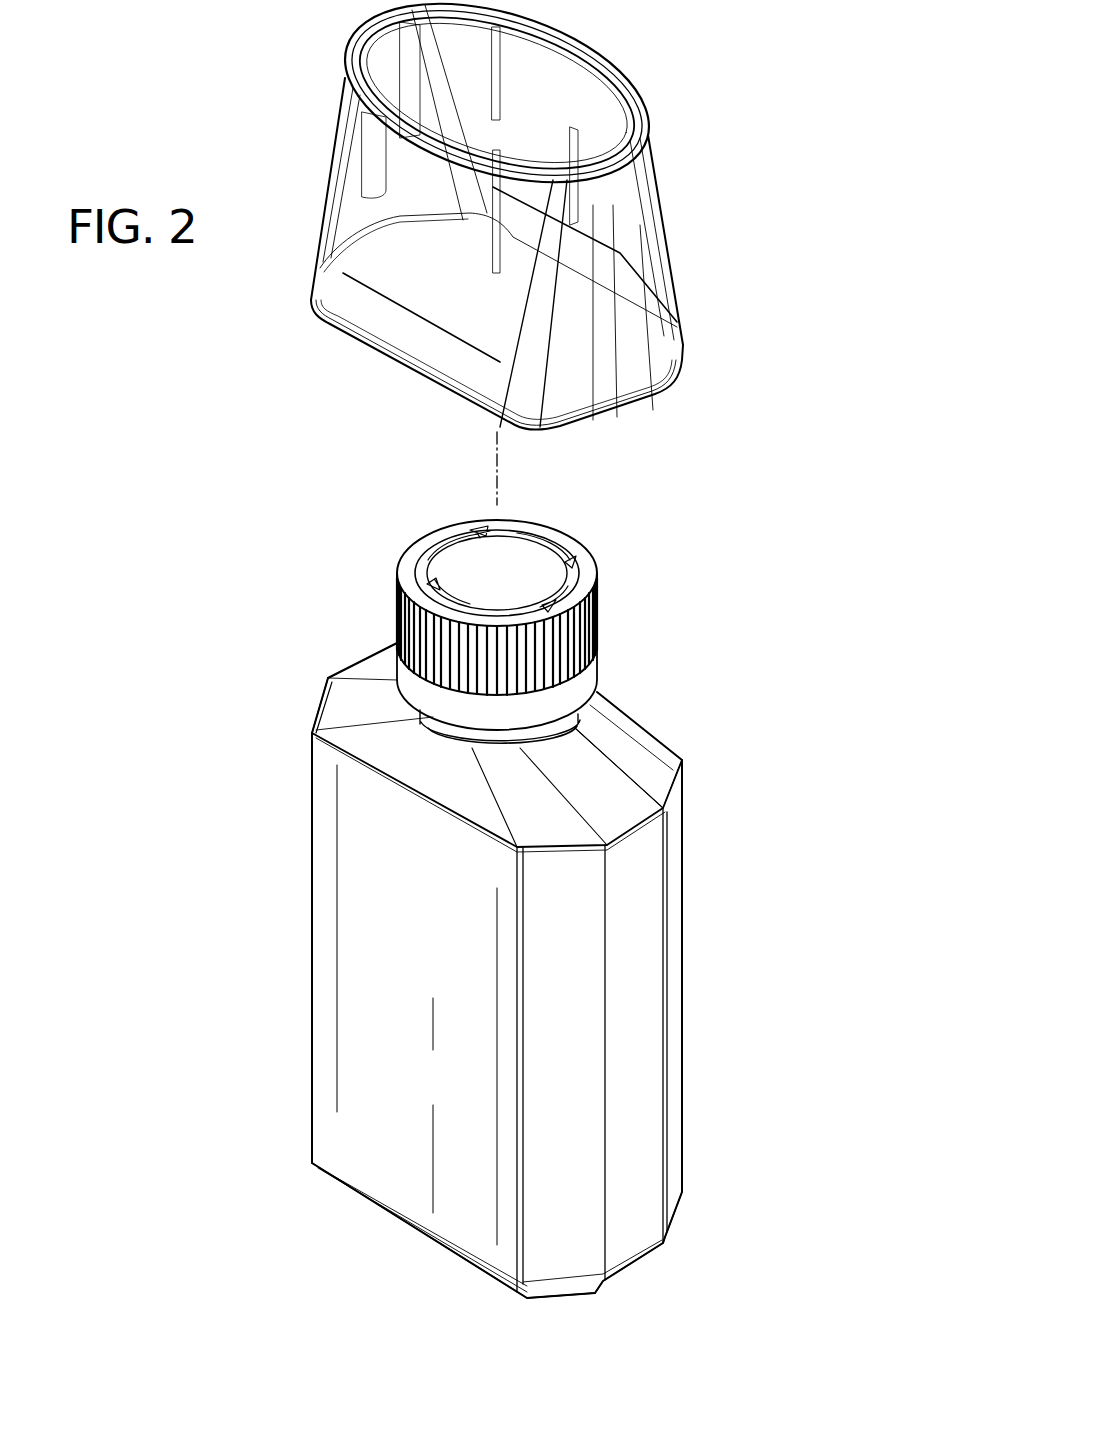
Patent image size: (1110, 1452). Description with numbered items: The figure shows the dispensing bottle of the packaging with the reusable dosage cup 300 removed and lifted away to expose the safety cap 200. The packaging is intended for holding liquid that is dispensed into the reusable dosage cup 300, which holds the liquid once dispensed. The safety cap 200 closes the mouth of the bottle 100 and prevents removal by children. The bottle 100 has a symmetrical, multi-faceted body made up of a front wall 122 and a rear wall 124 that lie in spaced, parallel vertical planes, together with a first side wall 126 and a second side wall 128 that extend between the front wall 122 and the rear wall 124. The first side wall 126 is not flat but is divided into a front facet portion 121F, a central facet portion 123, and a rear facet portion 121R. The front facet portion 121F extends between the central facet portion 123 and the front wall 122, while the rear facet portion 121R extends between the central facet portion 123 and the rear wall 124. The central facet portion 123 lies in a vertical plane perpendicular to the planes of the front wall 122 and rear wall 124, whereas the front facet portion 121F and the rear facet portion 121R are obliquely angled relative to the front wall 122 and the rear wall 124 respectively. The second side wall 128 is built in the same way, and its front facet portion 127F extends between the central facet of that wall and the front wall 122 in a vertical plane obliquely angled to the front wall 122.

The bottle 100 is at (683, 887).
The safety cap 200 is at (594, 567).
The reusable dosage cup 300 is at (614, 71).
The front facet portion 121F is at (542, 1243).
The rear facet portion 121R is at (671, 1165).
The front wall 122 is at (373, 1062).
The central facet portion 123 is at (629, 1224).
The rear wall 124 is at (648, 727).
The first side wall 126 is at (630, 1063).
The front facet portion 127F is at (310, 805).
The second side wall 128 is at (327, 673).